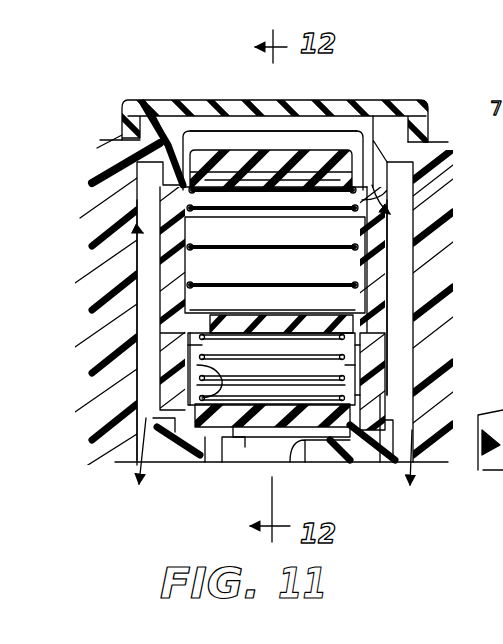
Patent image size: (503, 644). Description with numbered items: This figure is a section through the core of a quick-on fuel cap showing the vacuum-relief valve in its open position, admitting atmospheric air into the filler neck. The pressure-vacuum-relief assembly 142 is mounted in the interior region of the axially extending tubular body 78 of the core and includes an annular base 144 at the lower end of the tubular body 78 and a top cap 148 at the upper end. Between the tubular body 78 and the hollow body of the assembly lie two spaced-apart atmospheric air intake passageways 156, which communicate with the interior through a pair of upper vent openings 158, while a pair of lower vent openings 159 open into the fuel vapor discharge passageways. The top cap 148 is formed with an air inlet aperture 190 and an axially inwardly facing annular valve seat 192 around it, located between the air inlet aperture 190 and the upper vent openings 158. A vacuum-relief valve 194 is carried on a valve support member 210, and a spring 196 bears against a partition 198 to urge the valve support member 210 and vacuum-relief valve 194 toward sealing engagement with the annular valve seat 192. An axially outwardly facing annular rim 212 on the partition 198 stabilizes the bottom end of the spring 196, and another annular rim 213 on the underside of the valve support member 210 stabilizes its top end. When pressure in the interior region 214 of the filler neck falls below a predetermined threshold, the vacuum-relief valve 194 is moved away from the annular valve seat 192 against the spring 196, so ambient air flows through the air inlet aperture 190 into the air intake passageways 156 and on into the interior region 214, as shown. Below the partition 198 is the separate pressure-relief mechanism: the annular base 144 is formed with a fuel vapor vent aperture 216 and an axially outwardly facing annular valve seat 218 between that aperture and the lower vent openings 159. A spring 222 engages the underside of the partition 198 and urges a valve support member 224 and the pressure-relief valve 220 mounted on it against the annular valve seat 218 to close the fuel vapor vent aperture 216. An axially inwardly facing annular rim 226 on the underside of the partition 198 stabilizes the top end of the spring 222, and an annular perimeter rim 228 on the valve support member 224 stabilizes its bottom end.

The tubular body 78 is at (427, 211).
The pressure-vacuum-relief assembly 142 is at (137, 93).
The annular base 144 is at (225, 462).
The top cap 148 is at (120, 121).
The atmospheric air intake passageways 156 is at (142, 322).
The upper vent openings 158 is at (135, 180).
The lower vent openings 159 is at (418, 388).
The air inlet aperture 190 is at (295, 72).
The annular valve seat 192 is at (193, 110).
The vacuum-relief valve 194 is at (264, 152).
The spring 196 is at (183, 280).
The partition 198 is at (257, 318).
The valve support member 210 is at (333, 185).
The annular rim 212 is at (206, 300).
The annular rim 213 is at (210, 192).
The interior region 214 is at (364, 490).
The fuel vapor vent aperture 216 is at (290, 447).
The annular valve seat 218 is at (210, 462).
The pressure-relief valve 220 is at (185, 460).
The spring 222 is at (360, 360).
The valve support member 224 is at (185, 367).
The annular rim 226 is at (188, 347).
The annular perimeter rim 228 is at (190, 420).